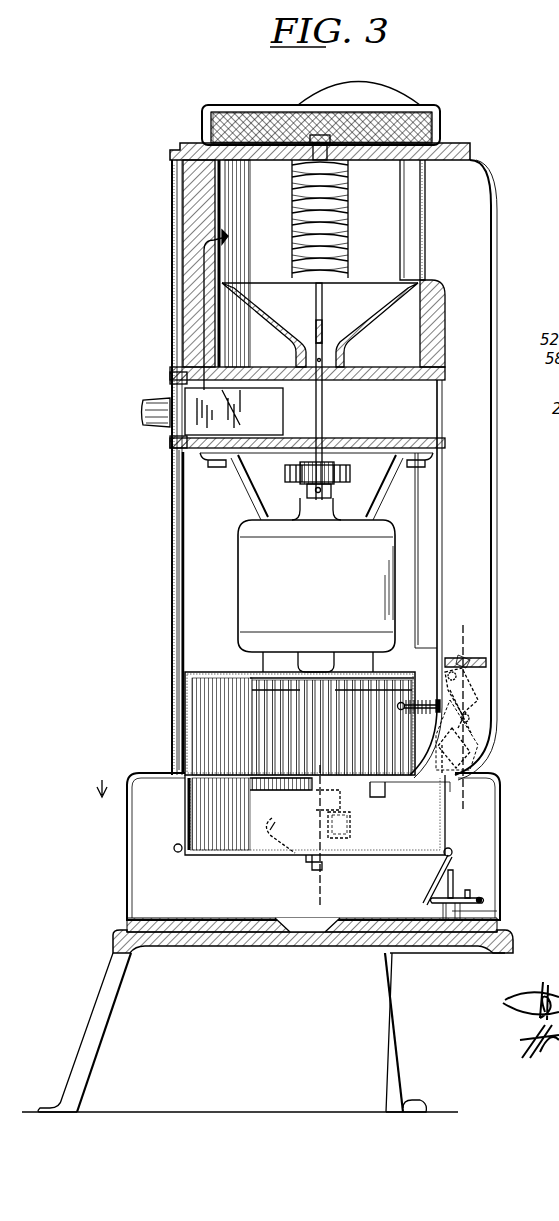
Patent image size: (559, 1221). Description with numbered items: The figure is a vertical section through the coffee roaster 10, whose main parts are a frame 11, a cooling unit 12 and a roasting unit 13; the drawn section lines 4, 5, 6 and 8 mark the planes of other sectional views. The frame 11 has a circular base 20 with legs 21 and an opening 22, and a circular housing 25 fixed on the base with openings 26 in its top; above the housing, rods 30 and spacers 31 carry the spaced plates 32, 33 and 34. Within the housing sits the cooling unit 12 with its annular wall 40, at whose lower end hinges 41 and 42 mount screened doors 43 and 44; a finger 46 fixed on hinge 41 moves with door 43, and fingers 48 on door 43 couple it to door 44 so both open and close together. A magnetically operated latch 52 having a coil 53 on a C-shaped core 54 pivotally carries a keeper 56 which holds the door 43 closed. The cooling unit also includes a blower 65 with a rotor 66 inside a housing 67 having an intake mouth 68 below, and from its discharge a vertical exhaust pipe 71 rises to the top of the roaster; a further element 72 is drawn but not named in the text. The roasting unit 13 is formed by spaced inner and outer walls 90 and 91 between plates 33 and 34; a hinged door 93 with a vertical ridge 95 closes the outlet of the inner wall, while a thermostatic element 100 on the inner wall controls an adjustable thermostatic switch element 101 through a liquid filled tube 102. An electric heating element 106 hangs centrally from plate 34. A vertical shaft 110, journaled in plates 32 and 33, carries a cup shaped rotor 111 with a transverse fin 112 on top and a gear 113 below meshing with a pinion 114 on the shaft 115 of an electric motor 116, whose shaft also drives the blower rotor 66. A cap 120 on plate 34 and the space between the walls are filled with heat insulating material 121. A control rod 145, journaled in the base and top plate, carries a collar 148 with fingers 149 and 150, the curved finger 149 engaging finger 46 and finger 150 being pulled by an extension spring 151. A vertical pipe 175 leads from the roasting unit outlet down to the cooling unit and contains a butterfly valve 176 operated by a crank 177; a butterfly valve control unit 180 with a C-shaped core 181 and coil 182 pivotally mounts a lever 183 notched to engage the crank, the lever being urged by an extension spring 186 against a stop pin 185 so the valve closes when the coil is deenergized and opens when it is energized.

The section line 4— 4 is at (309, 772).
The section line 5— 5 is at (453, 631).
The section line 6— 6 is at (185, 207).
The section line 8— 8 is at (170, 385).
The coffee roaster 10 is at (503, 92).
The frame 11 is at (118, 800).
The cooling unit 12 is at (168, 717).
The roasting unit 13 is at (160, 275).
The circular base 20 is at (222, 920).
The legs 21 is at (106, 985).
The opening 22 is at (322, 932).
The circular housing 25 is at (126, 838).
The openings 26 is at (142, 775).
The rods 30 is at (186, 335).
The spacers 31 is at (176, 506).
The plate 32 is at (386, 440).
The plate 33 is at (376, 368).
The plate 34 is at (196, 152).
The annular wall 40 is at (186, 818).
The hinge 41 is at (450, 851).
The hinge 42 is at (176, 850).
The door 43 is at (366, 855).
The door 44 is at (268, 855).
The finger 46 is at (440, 868).
The fingers 48 is at (278, 828).
The magnetically operated latch 52 is at (364, 821).
The coil 53 is at (352, 829).
The C-shaped core 54 is at (345, 803).
The keeper 56 is at (318, 864).
The blower 65 is at (226, 656).
The rotor 66 is at (268, 678).
The blower housing 67 is at (190, 688).
The intake mouth 68 is at (386, 797).
The vertical exhaust pipe 71 is at (324, 92).
The cap body 72 is at (394, 98).
The inner wall 90 is at (232, 205).
The outer wall 91 is at (176, 226).
The door 93 is at (402, 226).
The ridge 95 is at (402, 244).
The thermostatic element 100 is at (228, 240).
The adjustable thermostatic switch element 101 is at (200, 418).
The liquid filled tube 102 is at (206, 295).
The electric heating element 106 is at (343, 206).
The vertical shaft 110 is at (323, 404).
The cup shaped rotor 111 is at (358, 292).
The transverse fin 112 is at (316, 307).
The gear 113 is at (350, 472).
The pinion 114 is at (332, 485).
The motor shaft 115 is at (318, 500).
The electric motor 116 is at (252, 580).
The cap 120 is at (228, 105).
The heat insulating material 121 is at (420, 126).
The control rod 145 is at (453, 877).
The collar 148 is at (497, 914).
The finger 149 is at (433, 902).
The finger 150 is at (484, 900).
The extension spring 151 is at (474, 896).
The vertical pipe 175 is at (498, 493).
The butterfly valve 176 is at (478, 658).
The crank 177 is at (458, 676).
The butterfly valve control unit 180 is at (494, 719).
The C-shaped core 181 is at (448, 758).
The coil 182 is at (470, 750).
The lever 183 is at (472, 707).
The stop pin 185 is at (434, 694).
The extension spring 186 is at (423, 712).